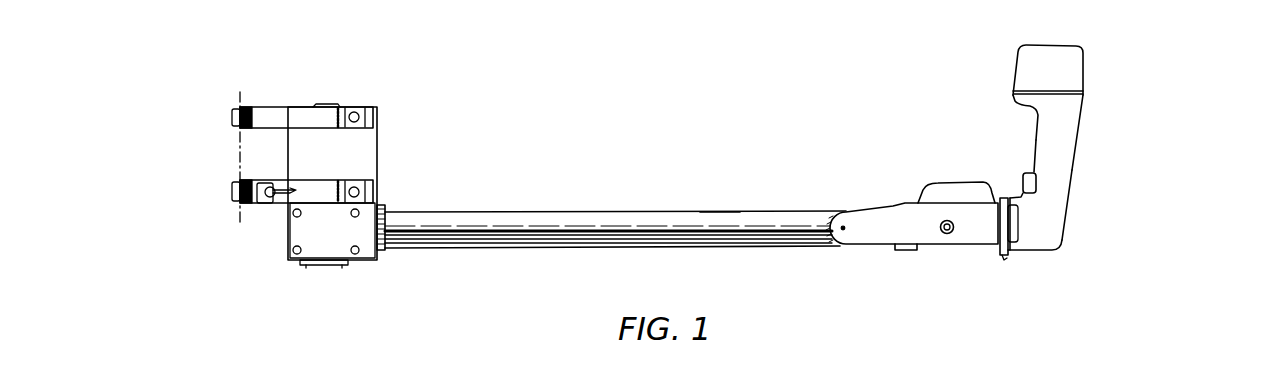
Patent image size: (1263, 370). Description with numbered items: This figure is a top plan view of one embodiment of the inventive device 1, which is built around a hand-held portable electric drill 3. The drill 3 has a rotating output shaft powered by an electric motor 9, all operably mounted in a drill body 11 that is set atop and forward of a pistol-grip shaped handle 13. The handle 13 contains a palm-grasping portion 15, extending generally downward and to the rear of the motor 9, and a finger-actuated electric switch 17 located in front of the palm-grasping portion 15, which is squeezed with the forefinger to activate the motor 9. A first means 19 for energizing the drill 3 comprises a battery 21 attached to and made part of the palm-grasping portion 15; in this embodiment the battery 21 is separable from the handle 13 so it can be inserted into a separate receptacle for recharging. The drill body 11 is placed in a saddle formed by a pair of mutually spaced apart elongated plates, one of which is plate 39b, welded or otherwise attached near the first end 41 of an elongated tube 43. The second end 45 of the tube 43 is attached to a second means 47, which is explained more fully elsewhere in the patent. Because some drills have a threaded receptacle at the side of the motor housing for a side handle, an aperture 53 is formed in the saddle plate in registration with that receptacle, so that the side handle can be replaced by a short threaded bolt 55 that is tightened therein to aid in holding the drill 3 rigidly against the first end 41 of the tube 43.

The second means 47 is at (282, 92).
The second end 45 is at (398, 247).
The elongated tube 43 is at (532, 233).
The device 1 is at (718, 210).
The elongated plate 39b is at (908, 220).
The electric motor 9 is at (955, 195).
The first end 41 is at (897, 249).
The threaded bolt 55 is at (946, 234).
The aperture 53 is at (951, 231).
The first means 19 is at (1112, 73).
The battery 21 is at (1068, 63).
The palm-grasping portion 15 is at (1068, 125).
The handle 13 is at (1077, 175).
The finger-actuated electric switch 17 is at (1025, 185).
The hand-held portable electric drill 3 is at (1067, 237).
The drill body 11 is at (1033, 232).